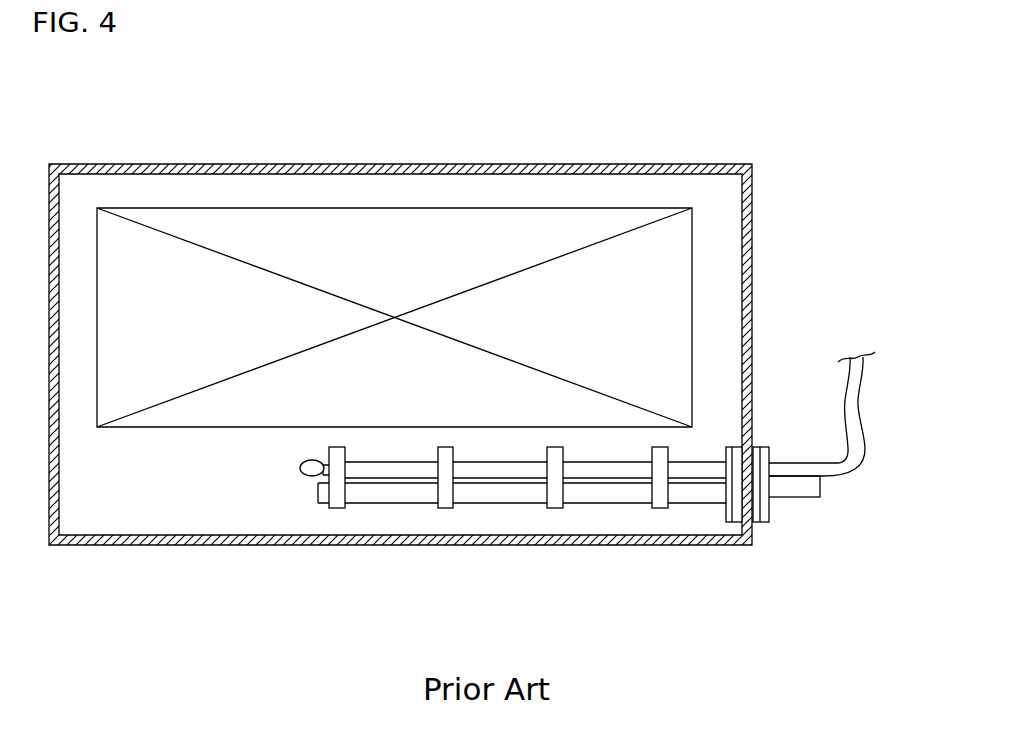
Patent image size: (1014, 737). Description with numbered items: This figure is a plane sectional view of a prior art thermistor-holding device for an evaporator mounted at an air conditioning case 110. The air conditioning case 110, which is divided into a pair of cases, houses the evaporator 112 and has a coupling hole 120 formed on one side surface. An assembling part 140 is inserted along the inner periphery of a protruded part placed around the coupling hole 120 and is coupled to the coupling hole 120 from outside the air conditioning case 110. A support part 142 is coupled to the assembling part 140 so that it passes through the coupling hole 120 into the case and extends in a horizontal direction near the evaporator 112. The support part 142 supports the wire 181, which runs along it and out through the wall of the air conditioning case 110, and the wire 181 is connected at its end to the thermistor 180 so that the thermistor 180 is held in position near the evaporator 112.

The air conditioning case 110 is at (753, 242).
The evaporator 112 is at (443, 222).
The coupling hole 120 is at (733, 510).
The assembling part 140 is at (758, 512).
The support part 142 is at (385, 490).
The thermistor 180 is at (310, 476).
The wire 181 is at (858, 408).